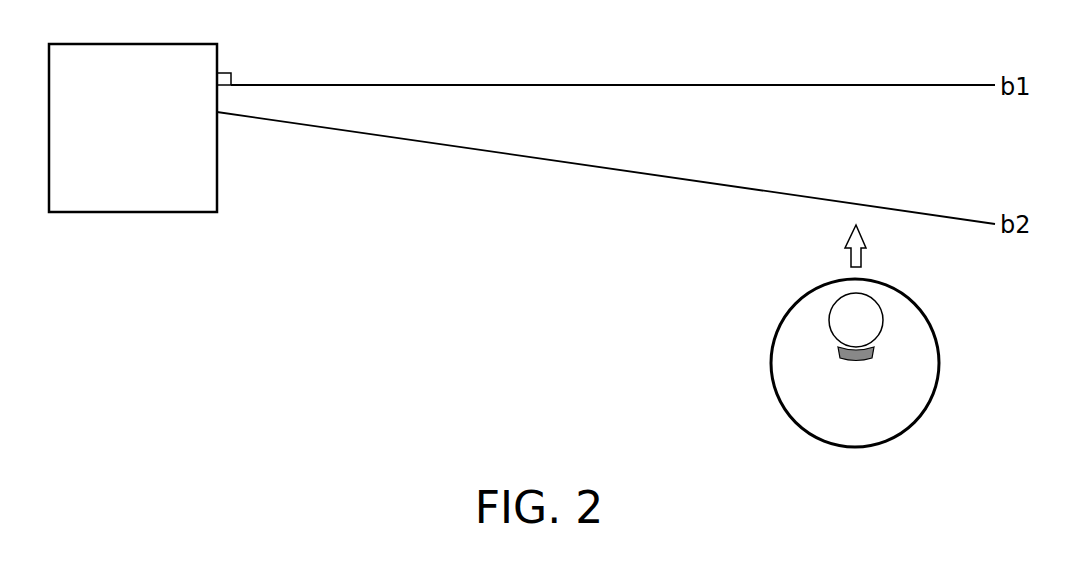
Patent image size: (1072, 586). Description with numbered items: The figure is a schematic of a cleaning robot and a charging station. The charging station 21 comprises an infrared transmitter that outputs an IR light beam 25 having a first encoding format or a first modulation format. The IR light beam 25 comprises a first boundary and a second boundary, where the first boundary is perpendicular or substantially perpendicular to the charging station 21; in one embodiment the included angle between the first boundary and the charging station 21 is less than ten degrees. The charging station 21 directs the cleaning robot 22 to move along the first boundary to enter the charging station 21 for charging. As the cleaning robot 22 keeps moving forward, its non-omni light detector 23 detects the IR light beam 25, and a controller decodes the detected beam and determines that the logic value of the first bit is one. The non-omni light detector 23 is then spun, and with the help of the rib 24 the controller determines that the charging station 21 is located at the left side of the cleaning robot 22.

The charging station 21 is at (119, 173).
The cleaning robot 22 is at (771, 361).
The non-omni light detector 23 is at (874, 322).
The rib 24 is at (855, 361).
The IR light beam 25 is at (603, 84).